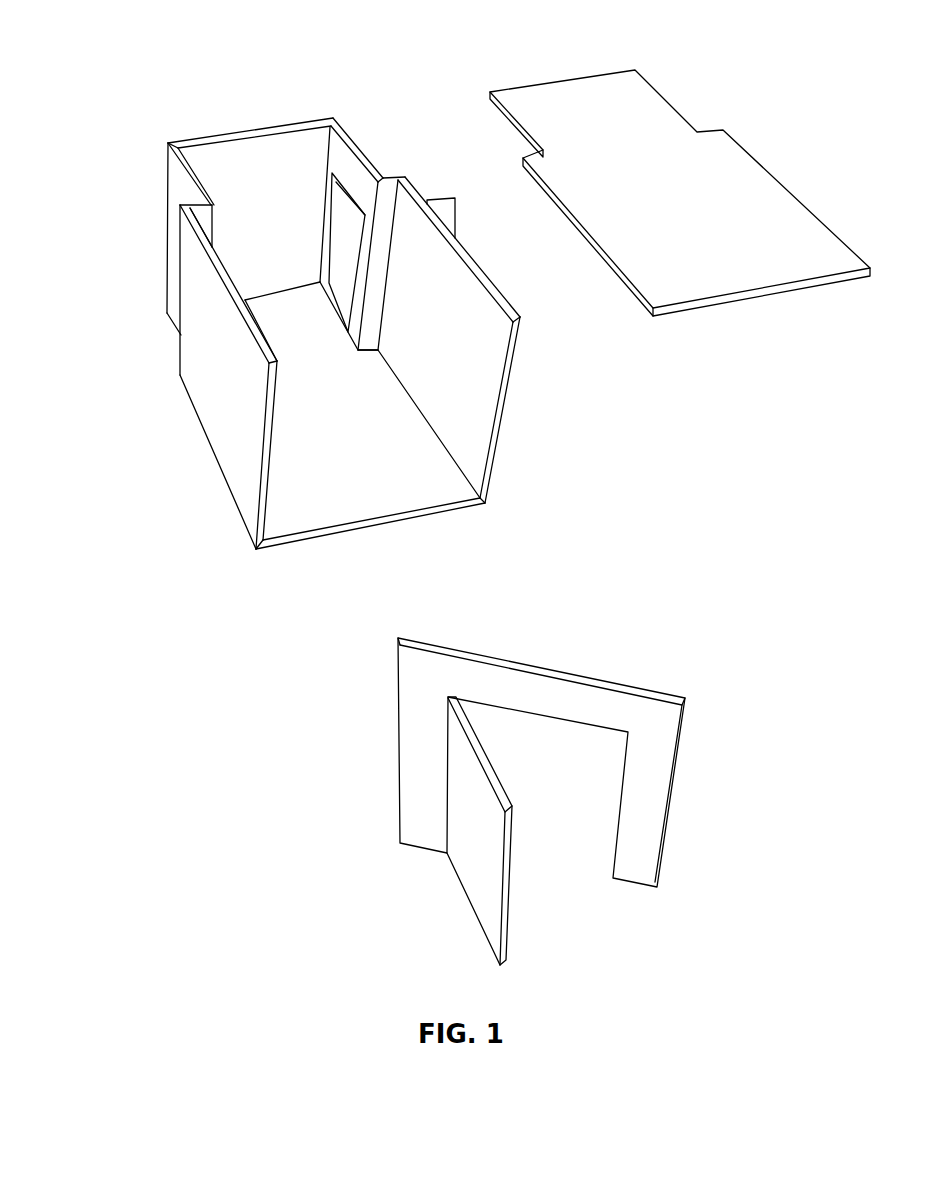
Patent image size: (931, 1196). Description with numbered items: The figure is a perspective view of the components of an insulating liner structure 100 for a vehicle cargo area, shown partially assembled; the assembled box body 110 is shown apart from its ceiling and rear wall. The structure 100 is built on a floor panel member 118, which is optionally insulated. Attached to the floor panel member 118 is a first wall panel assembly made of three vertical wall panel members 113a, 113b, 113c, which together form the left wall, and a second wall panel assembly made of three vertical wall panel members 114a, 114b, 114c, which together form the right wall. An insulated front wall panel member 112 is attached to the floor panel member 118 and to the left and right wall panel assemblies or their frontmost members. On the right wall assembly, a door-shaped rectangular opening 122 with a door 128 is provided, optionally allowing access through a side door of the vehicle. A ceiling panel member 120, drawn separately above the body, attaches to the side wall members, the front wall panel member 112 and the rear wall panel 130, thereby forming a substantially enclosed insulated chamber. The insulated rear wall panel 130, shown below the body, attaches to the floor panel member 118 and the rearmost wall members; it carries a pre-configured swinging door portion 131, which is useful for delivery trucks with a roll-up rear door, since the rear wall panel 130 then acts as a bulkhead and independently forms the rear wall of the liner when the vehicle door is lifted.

The insulating liner structure 100 is at (153, 62).
The box body 110 is at (228, 100).
The front wall panel member 112 is at (219, 131).
The front left side wall section 113a is at (212, 402).
The left step wall 113b is at (217, 225).
The rear left side wall section 113c is at (166, 197).
The front right side wall section 114a is at (503, 418).
The right step wall 114b is at (387, 177).
The rear right side wall section 114c is at (343, 128).
The floor panel member 118 is at (372, 527).
The ceiling panel member 120 is at (788, 188).
The door-shaped rectangular opening 122 is at (352, 230).
The door 128 is at (437, 198).
The rear wall panel 130 is at (578, 673).
The swinging door portion 131 is at (468, 865).